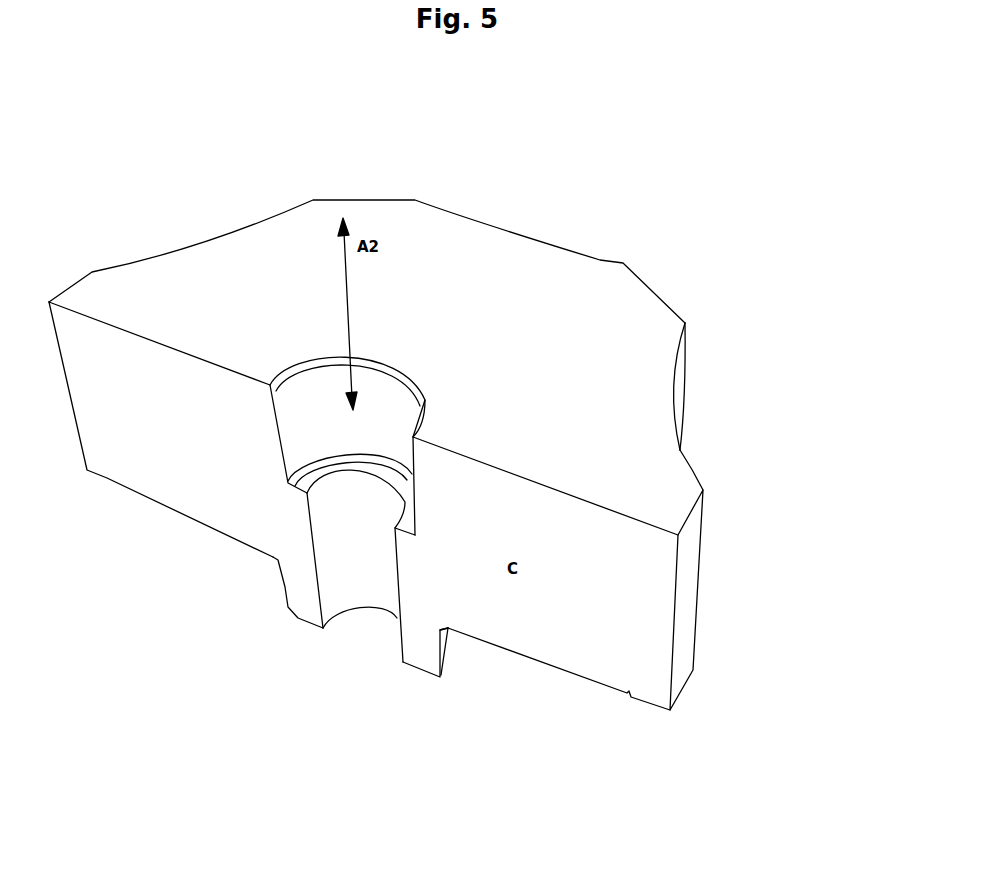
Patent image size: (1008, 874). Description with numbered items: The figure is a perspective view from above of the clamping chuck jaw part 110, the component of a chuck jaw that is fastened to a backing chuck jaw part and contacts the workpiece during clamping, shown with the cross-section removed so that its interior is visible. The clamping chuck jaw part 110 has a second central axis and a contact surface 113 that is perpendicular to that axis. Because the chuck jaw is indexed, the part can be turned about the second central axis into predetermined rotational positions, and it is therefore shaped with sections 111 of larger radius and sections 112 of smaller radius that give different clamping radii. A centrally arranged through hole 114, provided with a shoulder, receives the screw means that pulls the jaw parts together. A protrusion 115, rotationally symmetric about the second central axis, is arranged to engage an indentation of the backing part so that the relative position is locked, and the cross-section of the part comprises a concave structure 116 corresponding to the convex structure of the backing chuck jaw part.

The clamping chuck jaw part 110 is at (665, 295).
The sections with larger radius 111 is at (707, 515).
The sections with smaller radius 112 is at (680, 410).
The contact surface 113 is at (580, 685).
The through hole 114 is at (370, 637).
The protrusion 115 is at (423, 677).
The concave structure 116 is at (278, 560).